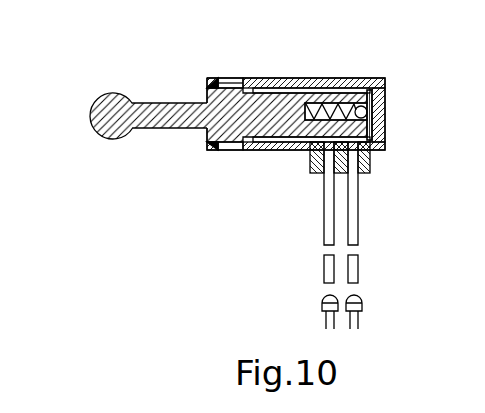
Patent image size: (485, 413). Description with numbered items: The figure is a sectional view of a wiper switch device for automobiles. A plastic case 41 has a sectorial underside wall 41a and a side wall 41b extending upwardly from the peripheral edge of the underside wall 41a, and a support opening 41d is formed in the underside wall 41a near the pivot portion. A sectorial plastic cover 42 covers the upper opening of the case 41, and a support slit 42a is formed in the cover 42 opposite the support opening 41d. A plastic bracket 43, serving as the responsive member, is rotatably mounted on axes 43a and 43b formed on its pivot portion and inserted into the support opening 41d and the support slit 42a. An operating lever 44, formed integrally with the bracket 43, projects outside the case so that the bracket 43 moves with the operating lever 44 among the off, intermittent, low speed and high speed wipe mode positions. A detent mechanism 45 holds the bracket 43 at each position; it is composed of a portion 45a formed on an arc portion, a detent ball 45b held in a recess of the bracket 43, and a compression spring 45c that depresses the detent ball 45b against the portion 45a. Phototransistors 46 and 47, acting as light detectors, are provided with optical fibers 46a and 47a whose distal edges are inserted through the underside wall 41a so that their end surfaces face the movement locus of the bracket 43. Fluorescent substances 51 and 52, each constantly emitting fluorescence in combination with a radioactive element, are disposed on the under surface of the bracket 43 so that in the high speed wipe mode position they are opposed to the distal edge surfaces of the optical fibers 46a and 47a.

The plastic case 41 is at (388, 146).
The underside wall 41a is at (263, 150).
The side wall 41b is at (380, 120).
The support opening 41d is at (211, 151).
The plastic cover 42 is at (345, 90).
The support slit 42a is at (222, 83).
The plastic bracket 43 is at (288, 92).
The axis 43a is at (236, 150).
The axis 43b is at (233, 83).
The operating lever 44 is at (96, 100).
The detent mechanism 45 is at (370, 91).
The portion 45a is at (372, 90).
The detent ball 45b is at (368, 110).
The compression spring 45c is at (319, 105).
The phototransistor 46 is at (322, 308).
The optical fiber 46a is at (325, 220).
The phototransistor 47 is at (362, 308).
The optical fiber 47a is at (358, 220).
The fluorescent substance 51 is at (316, 152).
The fluorescent substance 52 is at (368, 152).